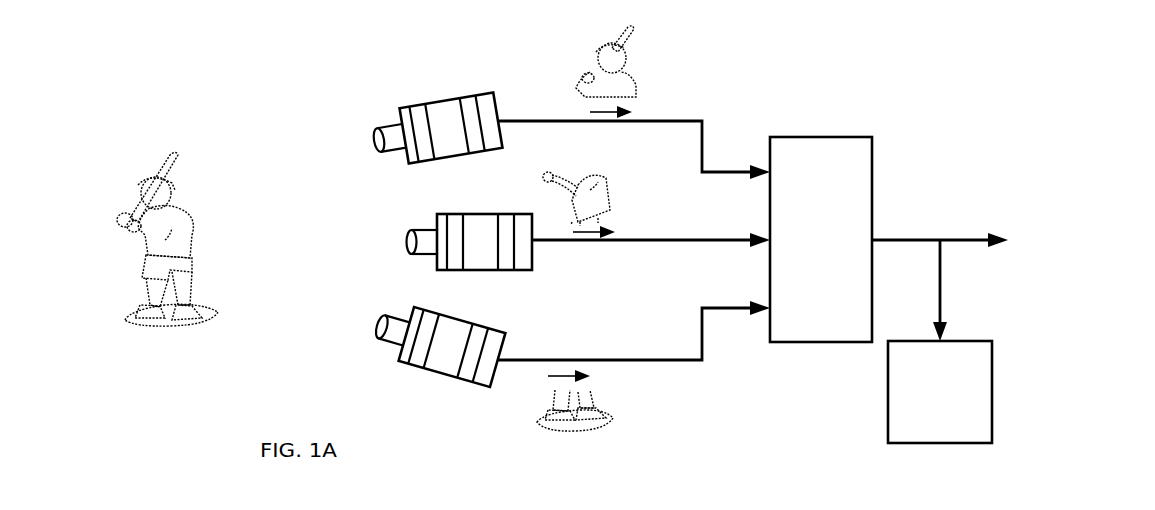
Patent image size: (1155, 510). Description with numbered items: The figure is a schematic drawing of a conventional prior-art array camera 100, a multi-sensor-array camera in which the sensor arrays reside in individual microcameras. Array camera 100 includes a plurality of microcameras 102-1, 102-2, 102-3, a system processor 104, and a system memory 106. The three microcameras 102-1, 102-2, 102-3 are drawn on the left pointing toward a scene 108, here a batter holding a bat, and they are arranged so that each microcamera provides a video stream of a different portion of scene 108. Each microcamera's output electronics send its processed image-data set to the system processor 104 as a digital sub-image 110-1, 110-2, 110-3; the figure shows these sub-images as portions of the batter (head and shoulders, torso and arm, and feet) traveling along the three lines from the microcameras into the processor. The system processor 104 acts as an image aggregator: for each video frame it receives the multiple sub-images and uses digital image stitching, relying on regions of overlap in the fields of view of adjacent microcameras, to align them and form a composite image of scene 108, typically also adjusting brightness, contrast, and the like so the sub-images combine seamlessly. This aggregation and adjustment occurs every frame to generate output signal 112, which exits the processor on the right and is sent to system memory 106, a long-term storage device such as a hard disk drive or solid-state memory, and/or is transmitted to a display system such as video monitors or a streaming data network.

The array camera 100 is at (220, 48).
The scene 108 is at (130, 152).
The microcamera 102-1 is at (370, 110).
The microcamera 102-2 is at (395, 220).
The microcamera 102-3 is at (370, 305).
The digital sub-image 110-1 is at (656, 66).
The digital sub-image 110-2 is at (627, 190).
The digital sub-image 110-3 is at (626, 393).
The system processor 104 is at (821, 239).
The system memory 106 is at (940, 392).
The output signal 112 is at (888, 240).